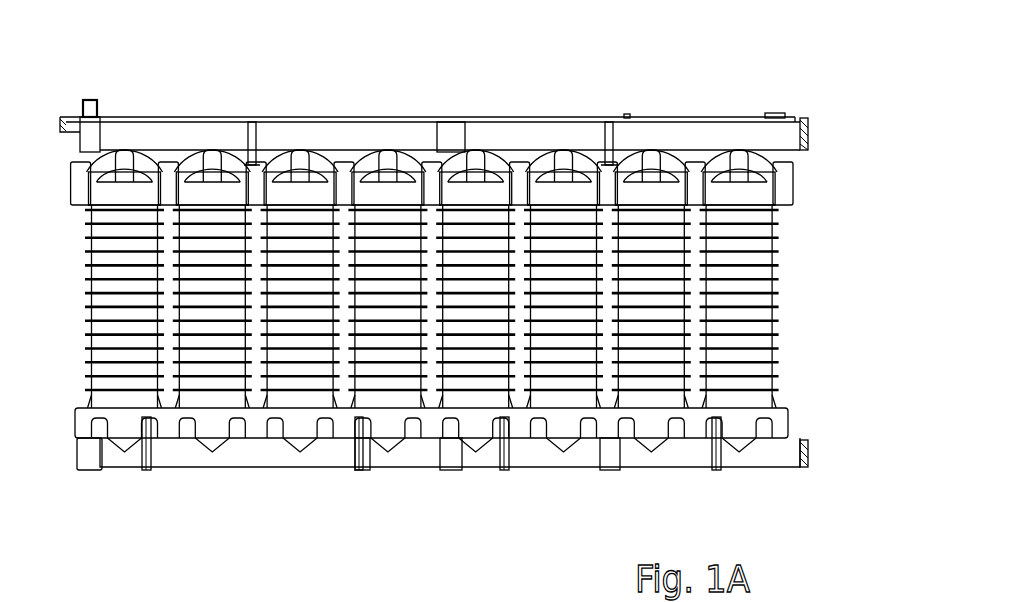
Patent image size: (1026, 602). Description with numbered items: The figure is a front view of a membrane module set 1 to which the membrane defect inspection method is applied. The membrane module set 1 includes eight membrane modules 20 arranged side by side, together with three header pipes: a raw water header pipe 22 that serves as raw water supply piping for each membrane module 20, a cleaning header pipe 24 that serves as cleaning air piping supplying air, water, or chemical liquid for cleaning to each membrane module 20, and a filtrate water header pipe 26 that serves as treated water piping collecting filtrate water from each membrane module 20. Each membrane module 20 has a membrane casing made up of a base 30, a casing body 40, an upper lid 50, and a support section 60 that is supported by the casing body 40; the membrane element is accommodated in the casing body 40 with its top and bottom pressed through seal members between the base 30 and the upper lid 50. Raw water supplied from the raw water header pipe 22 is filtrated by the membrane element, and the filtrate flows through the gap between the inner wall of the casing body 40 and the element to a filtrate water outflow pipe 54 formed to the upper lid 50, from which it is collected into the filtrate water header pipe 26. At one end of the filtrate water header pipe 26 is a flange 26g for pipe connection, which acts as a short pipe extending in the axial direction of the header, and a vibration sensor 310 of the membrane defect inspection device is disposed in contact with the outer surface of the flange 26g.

The membrane module set 1 is at (812, 107).
The membrane module 20 is at (140, 400).
The raw water header pipe 22 is at (786, 452).
The cleaning header pipe 24 is at (528, 115).
The filtrate water header pipe 26 is at (788, 128).
The flange 26g is at (453, 128).
The base 30 is at (786, 415).
The casing body 40 is at (773, 272).
The upper lid 50 is at (583, 160).
The filtrate water outflow pipe 54 is at (122, 153).
The support section 60 is at (672, 150).
The vibration sensor 310 is at (84, 101).